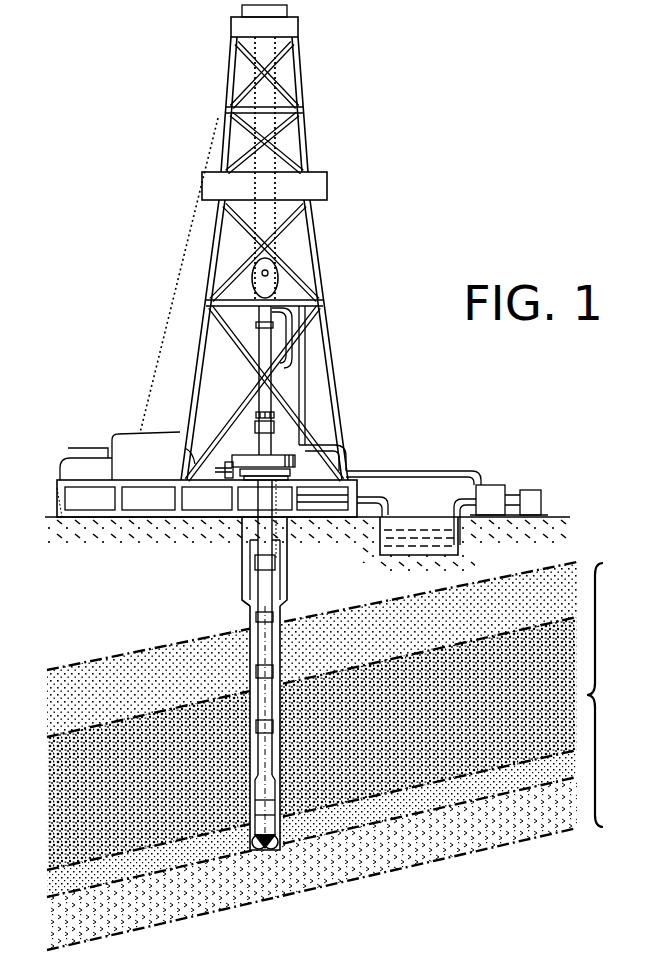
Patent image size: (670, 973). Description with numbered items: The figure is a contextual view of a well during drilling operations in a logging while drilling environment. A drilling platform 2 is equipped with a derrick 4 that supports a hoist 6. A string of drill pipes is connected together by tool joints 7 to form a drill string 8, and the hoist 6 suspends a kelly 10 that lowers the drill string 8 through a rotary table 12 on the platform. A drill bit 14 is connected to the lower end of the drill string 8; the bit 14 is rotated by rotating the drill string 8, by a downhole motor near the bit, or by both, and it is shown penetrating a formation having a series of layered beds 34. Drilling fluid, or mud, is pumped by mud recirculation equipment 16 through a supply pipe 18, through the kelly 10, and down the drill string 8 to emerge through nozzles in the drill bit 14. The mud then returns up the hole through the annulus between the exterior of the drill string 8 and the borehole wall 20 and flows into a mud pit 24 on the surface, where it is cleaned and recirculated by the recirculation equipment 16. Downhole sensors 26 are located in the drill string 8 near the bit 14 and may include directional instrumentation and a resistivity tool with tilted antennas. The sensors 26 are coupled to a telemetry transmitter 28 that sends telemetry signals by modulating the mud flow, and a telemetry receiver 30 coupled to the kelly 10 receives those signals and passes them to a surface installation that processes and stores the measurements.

The drilling platform 2 is at (57, 488).
The derrick 4 is at (307, 138).
The hoist 6 is at (278, 271).
The tool joints 7 is at (257, 617).
The drill string 8 is at (257, 630).
The kelly 10 is at (265, 345).
The rotary table 12 is at (283, 453).
The drill bit 14 is at (280, 843).
The mud recirculation equipment 16 is at (490, 488).
The supply pipe 18 is at (430, 470).
The borehole wall 20 is at (275, 622).
The mud pit 24 is at (450, 548).
The downhole sensors 26 is at (258, 810).
The telemetry transmitter 28 is at (270, 793).
The telemetry receiver 30 is at (275, 412).
The layered beds 34 is at (353, 756).